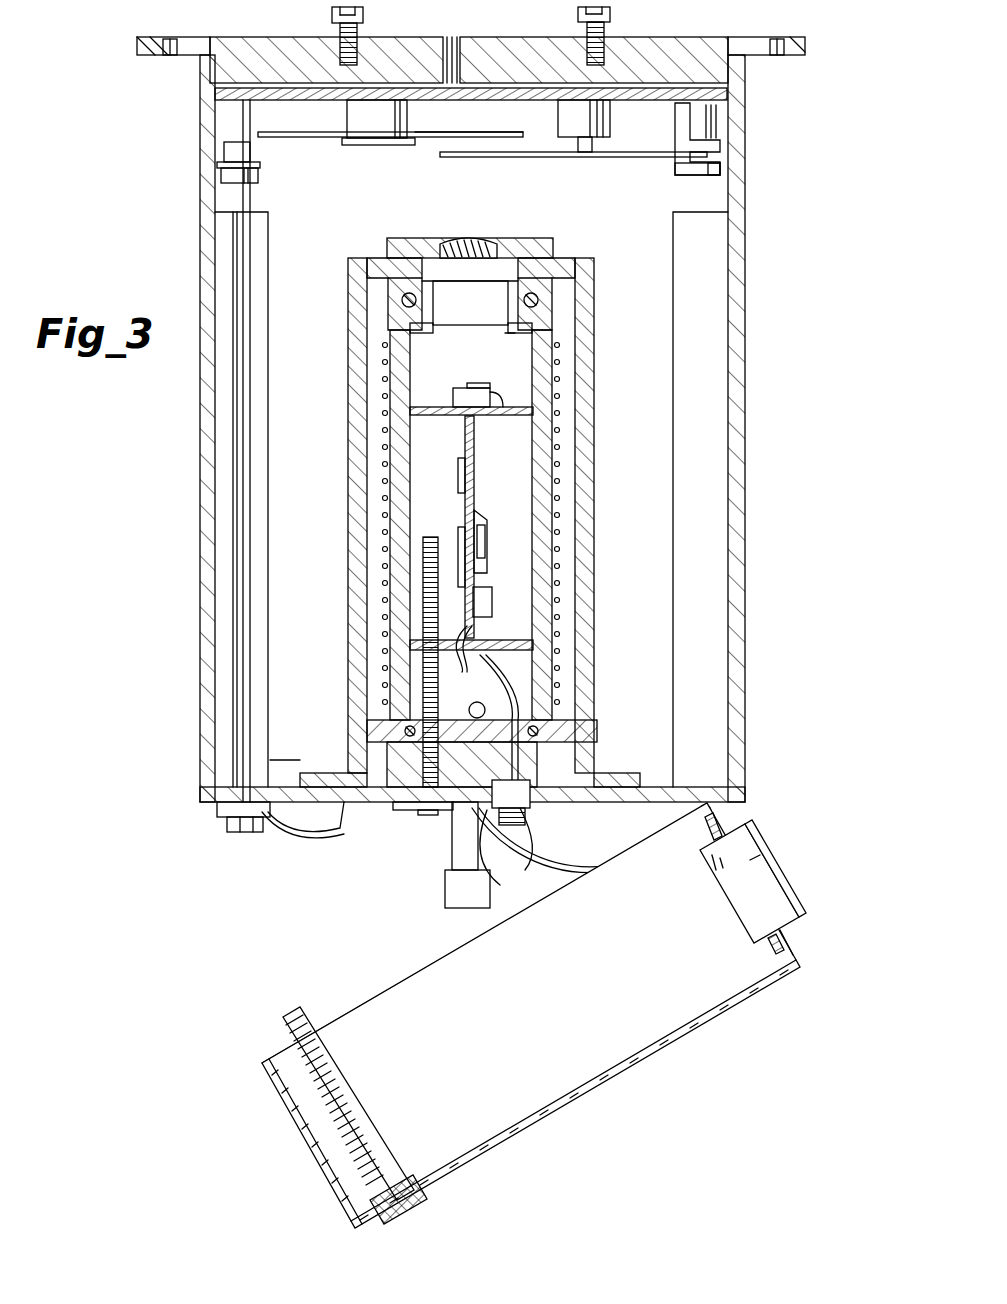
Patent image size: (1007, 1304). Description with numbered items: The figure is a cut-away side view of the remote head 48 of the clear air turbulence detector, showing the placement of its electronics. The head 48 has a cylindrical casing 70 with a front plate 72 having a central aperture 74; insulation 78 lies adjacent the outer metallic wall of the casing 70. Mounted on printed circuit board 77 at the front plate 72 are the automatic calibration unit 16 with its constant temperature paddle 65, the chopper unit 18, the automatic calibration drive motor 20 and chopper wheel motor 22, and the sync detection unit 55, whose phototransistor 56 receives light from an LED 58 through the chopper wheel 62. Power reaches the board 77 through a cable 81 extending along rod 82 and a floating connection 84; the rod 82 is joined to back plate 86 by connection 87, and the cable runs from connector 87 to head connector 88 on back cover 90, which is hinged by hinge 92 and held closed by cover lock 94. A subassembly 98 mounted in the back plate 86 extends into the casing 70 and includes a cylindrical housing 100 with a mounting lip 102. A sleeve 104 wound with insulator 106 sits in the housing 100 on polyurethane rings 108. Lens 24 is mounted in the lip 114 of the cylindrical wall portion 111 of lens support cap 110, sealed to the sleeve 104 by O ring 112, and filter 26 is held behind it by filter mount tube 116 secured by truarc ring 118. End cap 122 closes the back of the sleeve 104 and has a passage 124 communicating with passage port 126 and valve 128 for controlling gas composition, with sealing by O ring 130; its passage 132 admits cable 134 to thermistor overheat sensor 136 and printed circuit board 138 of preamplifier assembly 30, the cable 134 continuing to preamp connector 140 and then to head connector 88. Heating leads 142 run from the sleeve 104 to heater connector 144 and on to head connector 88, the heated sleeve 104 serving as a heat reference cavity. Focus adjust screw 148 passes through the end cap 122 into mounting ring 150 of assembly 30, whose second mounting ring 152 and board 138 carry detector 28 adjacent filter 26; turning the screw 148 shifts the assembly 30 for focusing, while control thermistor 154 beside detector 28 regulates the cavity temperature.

The automatic calibration unit 16 is at (342, 138).
The chopper unit 18 is at (587, 152).
The automatic calibration drive motor 20 is at (407, 118).
The chopper wheel motor 22 is at (607, 127).
The lens 24 is at (492, 238).
The filter 26 is at (475, 290).
The detector 28 is at (453, 392).
The preamplifier assembly 30 is at (463, 470).
The remote head 48 is at (158, 516).
The sync detection unit 55 is at (718, 170).
The phototransistor 56 is at (673, 180).
The LED 58 is at (713, 131).
The chopper wheel 62 is at (528, 160).
The constant temperature paddle 65 is at (422, 138).
The cylindrical casing 70 is at (745, 410).
The front plate 72 is at (293, 37).
The central aperture 74 is at (497, 45).
The printed circuit board 77 is at (293, 100).
The insulation 78 is at (225, 598).
The cable 81 is at (302, 836).
The rod 82 is at (250, 400).
The floating connection 84 is at (260, 180).
The back plate 86 is at (270, 775).
The connection 87 is at (220, 812).
The head connector 88 is at (776, 858).
The back cover 90 is at (690, 1040).
The hinge 92 is at (712, 811).
The cover lock 94 is at (380, 1150).
The subassembly 98 is at (350, 527).
The cylindrical housing 100 is at (352, 440).
The mounting lip 102 is at (375, 760).
The sleeve 104 is at (487, 535).
The insulator 106 is at (555, 478).
The polyurethane rings 108 is at (368, 258).
The lens support cap 110 is at (442, 238).
The cylindrical wall portion 111 is at (415, 331).
The O ring 112 is at (540, 300).
The lip 114 is at (402, 258).
The filter mount tube 116 is at (513, 328).
The truarc ring 118 is at (507, 337).
The end cap 122 is at (400, 810).
The passage 124 is at (497, 822).
The passage port 126 is at (452, 840).
The valve 128 is at (468, 907).
The O ring 130 is at (540, 728).
The passage 132 is at (535, 846).
The cable 134 is at (499, 708).
The thermistor overheat sensor 136 is at (472, 710).
The printed circuit board 138 is at (480, 628).
The preamp connector 140 is at (509, 859).
The heating leads 142 is at (575, 868).
The heater connector 144 is at (322, 782).
The focus adjust screw 148 is at (423, 583).
The mounting ring 150 is at (522, 650).
The second mounting ring 152 is at (524, 415).
The control thermistor 154 is at (500, 395).